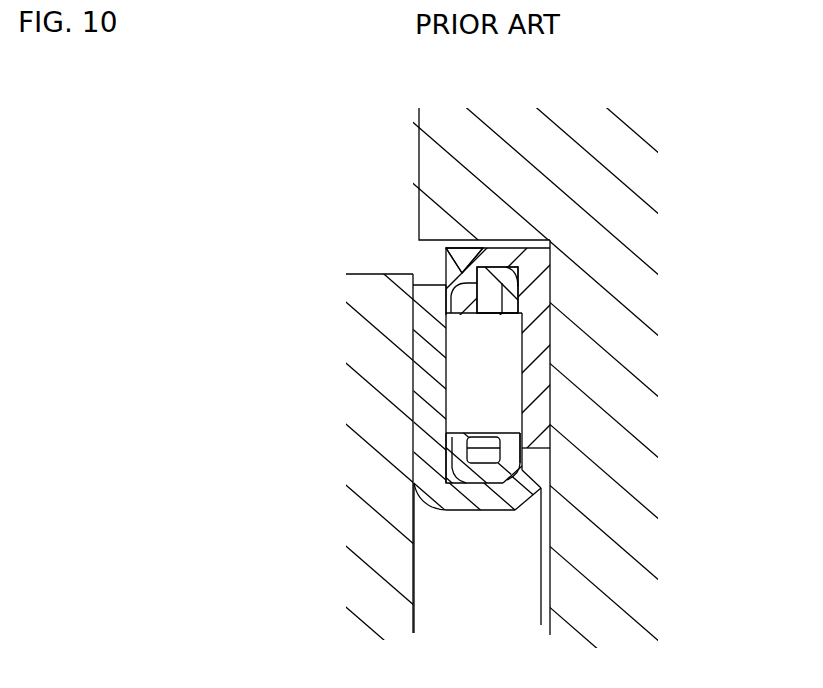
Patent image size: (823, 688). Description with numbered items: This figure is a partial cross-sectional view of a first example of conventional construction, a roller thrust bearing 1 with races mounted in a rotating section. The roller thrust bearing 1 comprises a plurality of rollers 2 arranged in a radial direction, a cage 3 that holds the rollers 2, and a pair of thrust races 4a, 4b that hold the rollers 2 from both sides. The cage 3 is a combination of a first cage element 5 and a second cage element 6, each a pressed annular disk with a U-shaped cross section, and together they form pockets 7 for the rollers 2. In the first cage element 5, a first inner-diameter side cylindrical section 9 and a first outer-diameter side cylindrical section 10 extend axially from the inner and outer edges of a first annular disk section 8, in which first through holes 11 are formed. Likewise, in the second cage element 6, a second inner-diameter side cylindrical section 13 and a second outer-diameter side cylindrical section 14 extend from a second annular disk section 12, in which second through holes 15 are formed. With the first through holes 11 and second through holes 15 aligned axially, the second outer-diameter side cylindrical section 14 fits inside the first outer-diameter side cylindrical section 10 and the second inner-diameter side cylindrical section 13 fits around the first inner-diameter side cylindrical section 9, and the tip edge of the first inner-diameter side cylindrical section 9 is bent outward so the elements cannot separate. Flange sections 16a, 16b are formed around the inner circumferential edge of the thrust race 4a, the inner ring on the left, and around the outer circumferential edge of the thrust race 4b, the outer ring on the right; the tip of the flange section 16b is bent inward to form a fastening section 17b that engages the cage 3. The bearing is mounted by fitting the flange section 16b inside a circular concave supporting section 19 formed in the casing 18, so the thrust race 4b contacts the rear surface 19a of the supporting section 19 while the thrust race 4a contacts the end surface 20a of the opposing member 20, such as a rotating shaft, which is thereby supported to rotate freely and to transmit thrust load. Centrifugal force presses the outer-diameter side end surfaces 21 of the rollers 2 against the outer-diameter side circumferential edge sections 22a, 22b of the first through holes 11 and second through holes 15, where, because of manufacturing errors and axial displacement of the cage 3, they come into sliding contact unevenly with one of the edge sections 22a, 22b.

The roller thrust bearing 1 is at (467, 482).
The roller 2 is at (470, 402).
The cage 3 is at (551, 250).
The thrust race 4a is at (410, 437).
The thrust race 4b is at (556, 382).
The first cage element 5 is at (522, 290).
The second cage element 6 is at (462, 312).
The pocket 7 is at (549, 422).
The first annular disk section 8 is at (546, 443).
The first inner-diameter side cylindrical section 9 is at (467, 482).
The first outer-diameter side cylindrical section 10 is at (485, 245).
The first through hole 11 is at (551, 316).
The second annular disk section 12 is at (445, 482).
The second inner-diameter side cylindrical section 13 is at (402, 535).
The second outer-diameter side cylindrical section 14 is at (449, 298).
The second through hole 15 is at (478, 426).
The flange section 16a is at (497, 497).
The flange section 16b is at (502, 244).
The fastening section 17b is at (462, 272).
The casing 18 is at (622, 166).
The supporting section 19 is at (549, 236).
The rear surface 19a is at (549, 408).
The opposing member 20 is at (430, 385).
The end surface 20a is at (420, 400).
The outer-diameter side end surface 21 is at (440, 330).
The outer-diameter side circumferential edge section 22a is at (550, 348).
The outer-diameter side circumferential edge section 22b is at (447, 326).